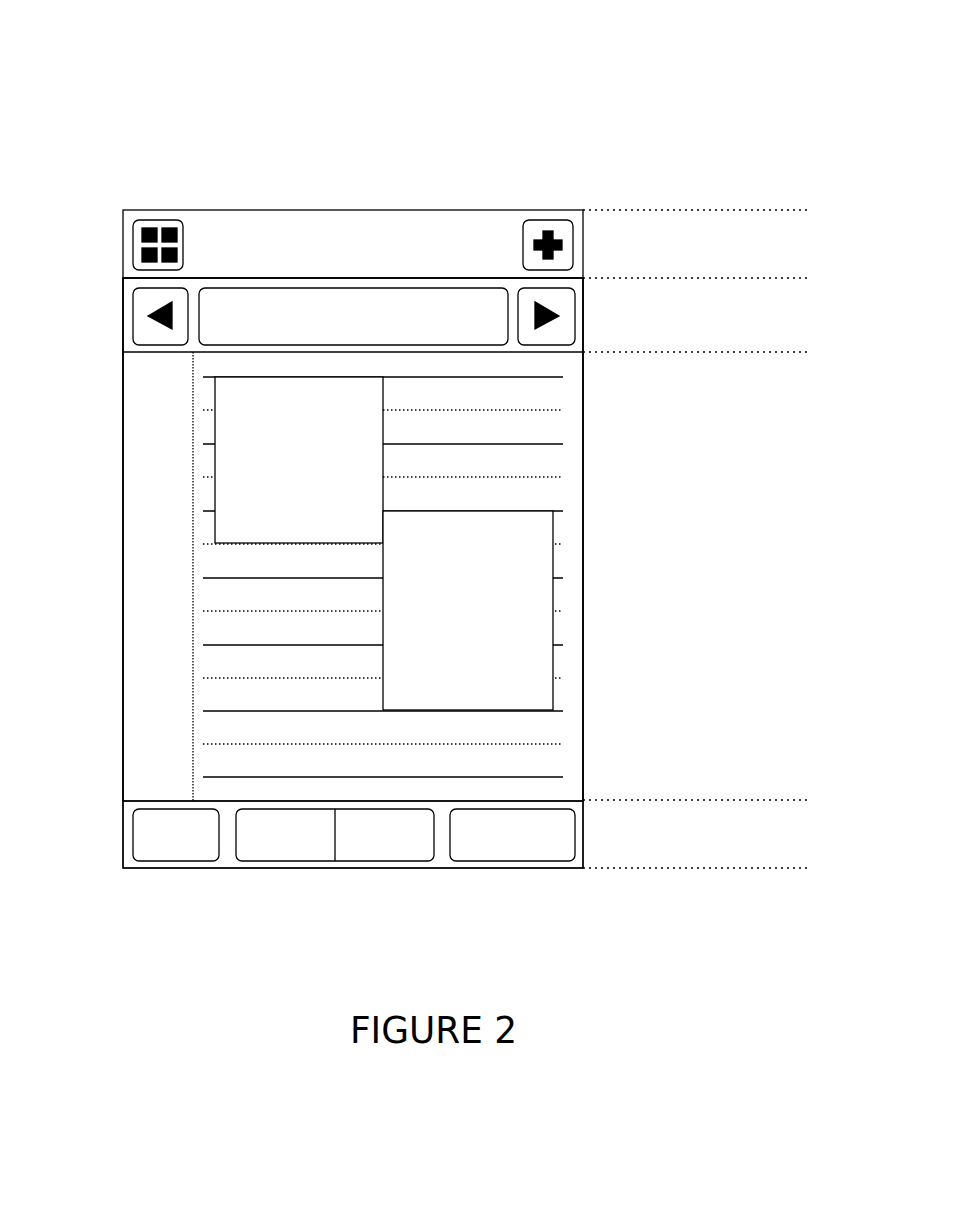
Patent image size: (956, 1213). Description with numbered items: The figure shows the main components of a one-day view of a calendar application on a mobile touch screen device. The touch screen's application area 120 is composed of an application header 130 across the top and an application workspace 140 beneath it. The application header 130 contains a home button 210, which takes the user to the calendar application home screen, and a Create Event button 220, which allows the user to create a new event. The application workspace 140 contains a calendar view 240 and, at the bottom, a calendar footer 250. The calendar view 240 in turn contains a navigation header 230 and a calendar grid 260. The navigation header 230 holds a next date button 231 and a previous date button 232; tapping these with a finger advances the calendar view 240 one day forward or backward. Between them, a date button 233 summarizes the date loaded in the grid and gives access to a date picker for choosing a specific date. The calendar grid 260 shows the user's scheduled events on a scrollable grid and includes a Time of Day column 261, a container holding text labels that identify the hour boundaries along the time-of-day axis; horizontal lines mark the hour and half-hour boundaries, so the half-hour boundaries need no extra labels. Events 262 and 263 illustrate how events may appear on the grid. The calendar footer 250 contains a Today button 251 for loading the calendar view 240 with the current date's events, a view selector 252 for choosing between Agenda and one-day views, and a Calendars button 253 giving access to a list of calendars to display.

The application area 120 is at (353, 453).
The application header 130 is at (770, 216).
The application workspace 140 is at (770, 284).
The home button 210 is at (159, 243).
The Create Event button 220 is at (550, 227).
The navigation header 230 is at (610, 284).
The next date button 231 is at (563, 302).
The previous date button 232 is at (143, 302).
The date button 233 is at (467, 308).
The calendar view 240 is at (690, 284).
The calendar footer 250 is at (690, 806).
The Today button 251 is at (179, 850).
The view selector 252 is at (329, 850).
The Calendars button 253 is at (514, 850).
The calendar grid 260 is at (610, 358).
The Time of Day column 261 is at (154, 602).
The event 262 is at (299, 460).
The event 263 is at (468, 610).